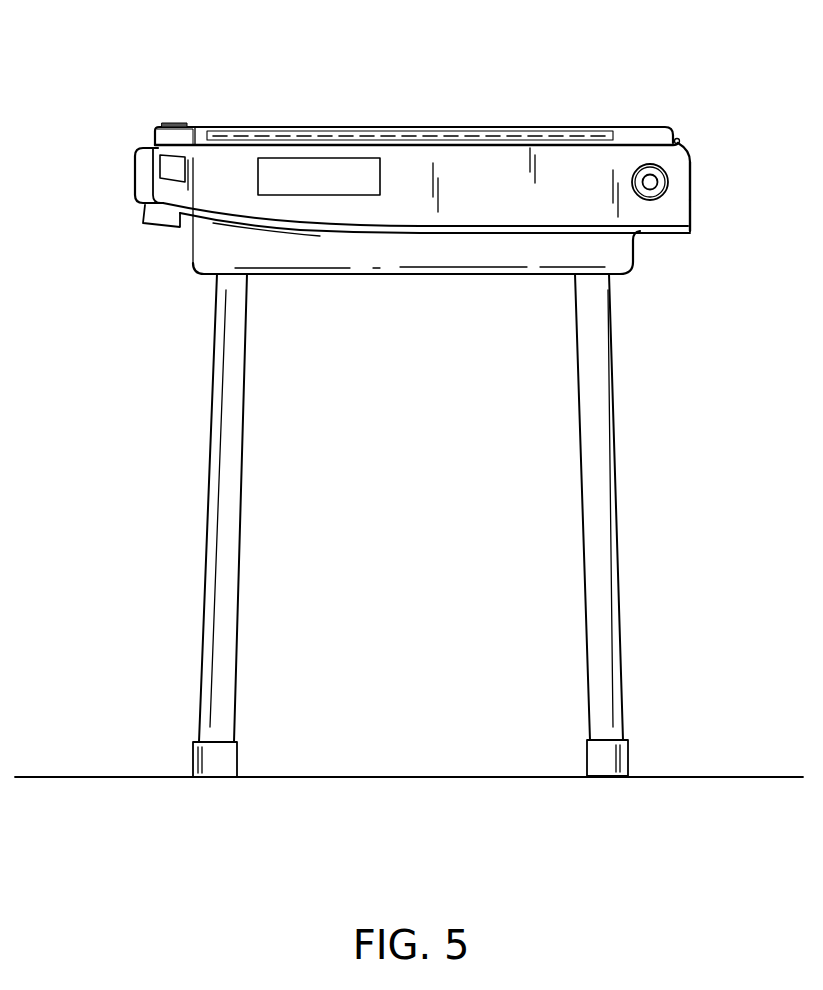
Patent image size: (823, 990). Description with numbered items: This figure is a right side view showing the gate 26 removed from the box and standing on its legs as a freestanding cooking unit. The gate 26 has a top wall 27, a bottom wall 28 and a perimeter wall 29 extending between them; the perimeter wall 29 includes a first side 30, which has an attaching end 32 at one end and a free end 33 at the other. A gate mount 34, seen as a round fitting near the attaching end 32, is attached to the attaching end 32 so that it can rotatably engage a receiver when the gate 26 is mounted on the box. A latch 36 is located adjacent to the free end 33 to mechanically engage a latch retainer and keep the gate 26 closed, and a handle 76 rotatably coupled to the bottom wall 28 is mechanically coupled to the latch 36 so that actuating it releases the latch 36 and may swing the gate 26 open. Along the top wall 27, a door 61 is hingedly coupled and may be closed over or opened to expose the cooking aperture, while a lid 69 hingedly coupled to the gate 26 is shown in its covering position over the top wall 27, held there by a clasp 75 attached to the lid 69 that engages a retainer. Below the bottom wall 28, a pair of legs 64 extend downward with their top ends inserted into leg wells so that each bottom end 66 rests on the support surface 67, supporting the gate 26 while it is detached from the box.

The gate 26 is at (137, 157).
The top wall 27 is at (196, 124).
The bottom wall 28 is at (293, 276).
The perimeter wall 29 is at (690, 181).
The first side 30 is at (221, 189).
The attaching end 32 is at (690, 192).
The free end 33 is at (135, 176).
The gate mount 34 is at (664, 174).
The latch 36 is at (160, 156).
The door 61 is at (588, 135).
The leg 64 is at (206, 578).
The bottom end 66 is at (192, 776).
The support surface 67 is at (380, 776).
The lid 69 is at (517, 127).
The clasp 75 is at (174, 122).
The handle 76 is at (150, 230).